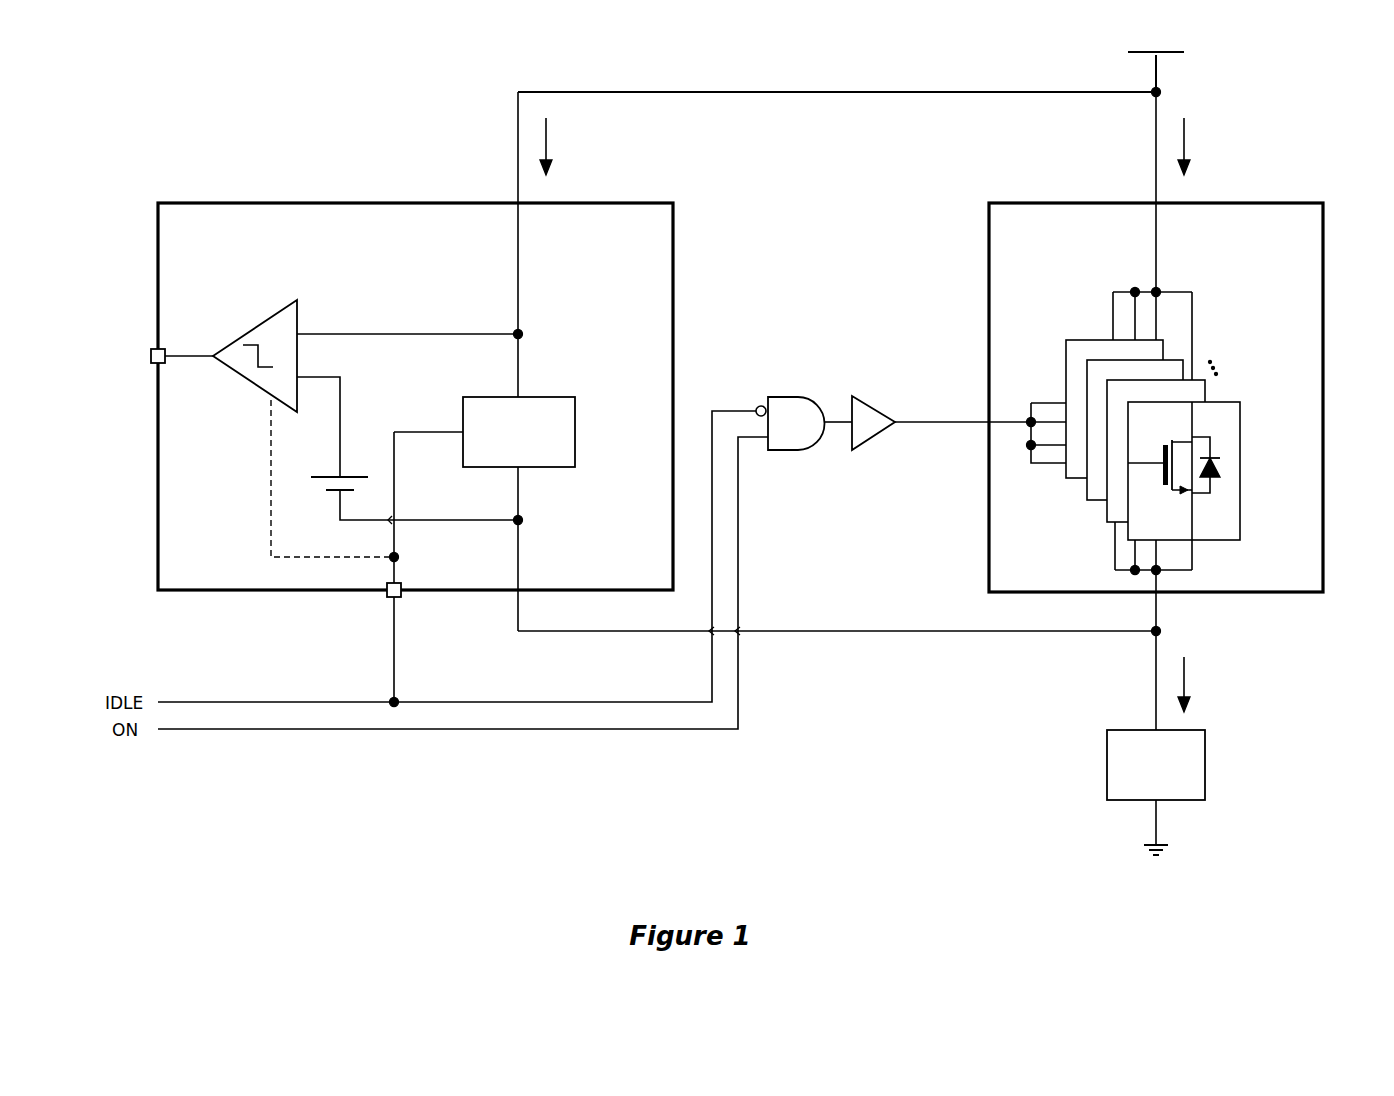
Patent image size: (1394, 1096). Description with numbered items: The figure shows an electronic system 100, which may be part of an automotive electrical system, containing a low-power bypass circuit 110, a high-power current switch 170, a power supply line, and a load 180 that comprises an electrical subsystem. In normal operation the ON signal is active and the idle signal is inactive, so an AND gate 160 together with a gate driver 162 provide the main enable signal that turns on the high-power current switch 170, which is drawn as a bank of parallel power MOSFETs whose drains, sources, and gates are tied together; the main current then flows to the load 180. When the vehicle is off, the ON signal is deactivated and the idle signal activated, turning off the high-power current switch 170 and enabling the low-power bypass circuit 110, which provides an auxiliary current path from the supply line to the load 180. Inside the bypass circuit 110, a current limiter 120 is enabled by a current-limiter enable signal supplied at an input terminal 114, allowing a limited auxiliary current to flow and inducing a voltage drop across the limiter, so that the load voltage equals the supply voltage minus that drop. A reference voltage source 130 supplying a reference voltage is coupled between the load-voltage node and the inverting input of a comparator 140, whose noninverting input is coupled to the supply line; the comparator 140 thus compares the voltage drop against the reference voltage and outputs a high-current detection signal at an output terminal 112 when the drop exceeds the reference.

The electronic system 100 is at (88, 56).
The low-power bypass circuit 110 is at (366, 397).
The output terminal 112 is at (112, 342).
The input terminal 114 is at (415, 642).
The current limiter 120 is at (519, 418).
The reference voltage source 130 is at (326, 478).
The comparator 140 is at (231, 352).
The AND gate 160 is at (804, 410).
The gate driver 162 is at (920, 410).
The high-power current switch 170 is at (1156, 411).
The load 180 is at (1226, 779).